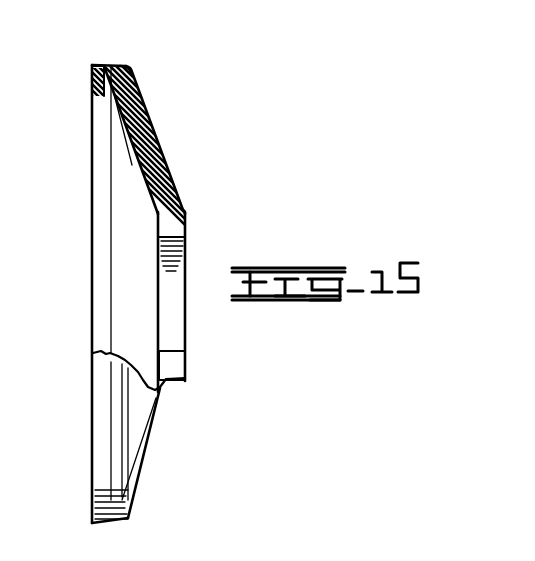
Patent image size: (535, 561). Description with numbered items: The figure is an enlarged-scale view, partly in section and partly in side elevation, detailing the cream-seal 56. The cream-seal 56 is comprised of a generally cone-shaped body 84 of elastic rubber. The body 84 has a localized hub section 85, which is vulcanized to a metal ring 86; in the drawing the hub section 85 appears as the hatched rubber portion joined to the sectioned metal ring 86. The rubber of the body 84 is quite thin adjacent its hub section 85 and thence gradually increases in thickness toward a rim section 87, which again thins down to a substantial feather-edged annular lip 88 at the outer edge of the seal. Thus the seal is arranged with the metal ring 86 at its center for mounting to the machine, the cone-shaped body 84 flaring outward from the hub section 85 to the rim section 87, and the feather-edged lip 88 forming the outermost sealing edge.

The cream-seal 56 is at (88, 124).
The generally cone-shaped body 84 is at (143, 132).
The localized hub section 85 is at (178, 208).
The metal ring 86 is at (187, 363).
The rim section 87 is at (128, 60).
The feather-edged annular lip 88 is at (92, 68).